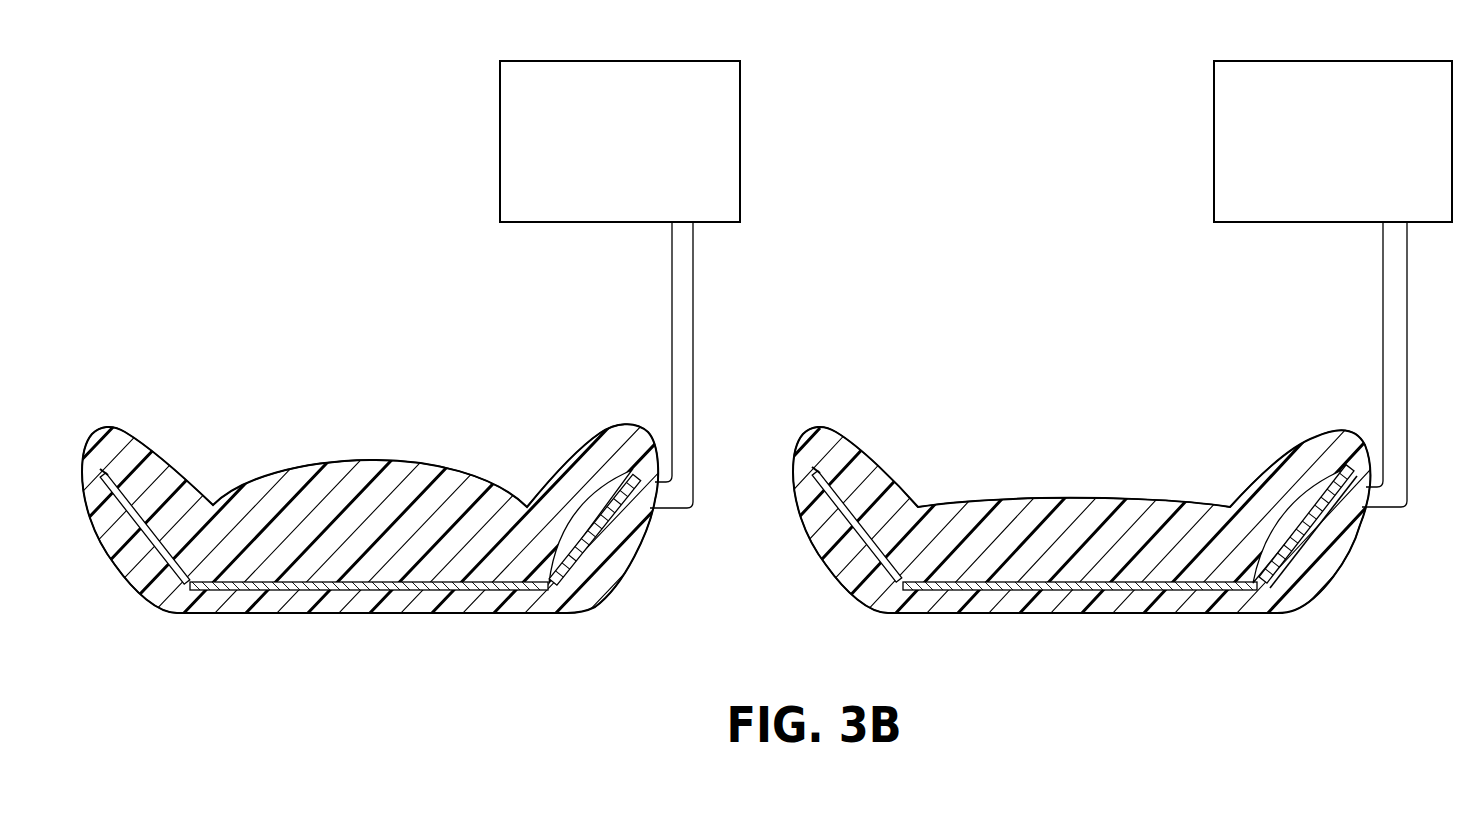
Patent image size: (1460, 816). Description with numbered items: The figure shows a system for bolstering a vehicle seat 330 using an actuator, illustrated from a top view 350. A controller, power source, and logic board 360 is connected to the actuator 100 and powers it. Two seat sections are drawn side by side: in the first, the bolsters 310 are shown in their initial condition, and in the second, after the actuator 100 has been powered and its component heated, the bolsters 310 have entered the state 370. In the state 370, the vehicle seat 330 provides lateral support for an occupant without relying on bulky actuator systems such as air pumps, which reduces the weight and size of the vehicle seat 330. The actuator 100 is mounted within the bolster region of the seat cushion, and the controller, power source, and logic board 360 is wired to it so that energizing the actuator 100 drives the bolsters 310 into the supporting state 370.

The actuator 100 is at (572, 503).
The bolsters 310 is at (613, 523).
The vehicle seat 330 is at (155, 470).
The top view 350 is at (112, 343).
The controller, power source, and logic board 360 is at (500, 143).
The state 370 is at (1320, 507).